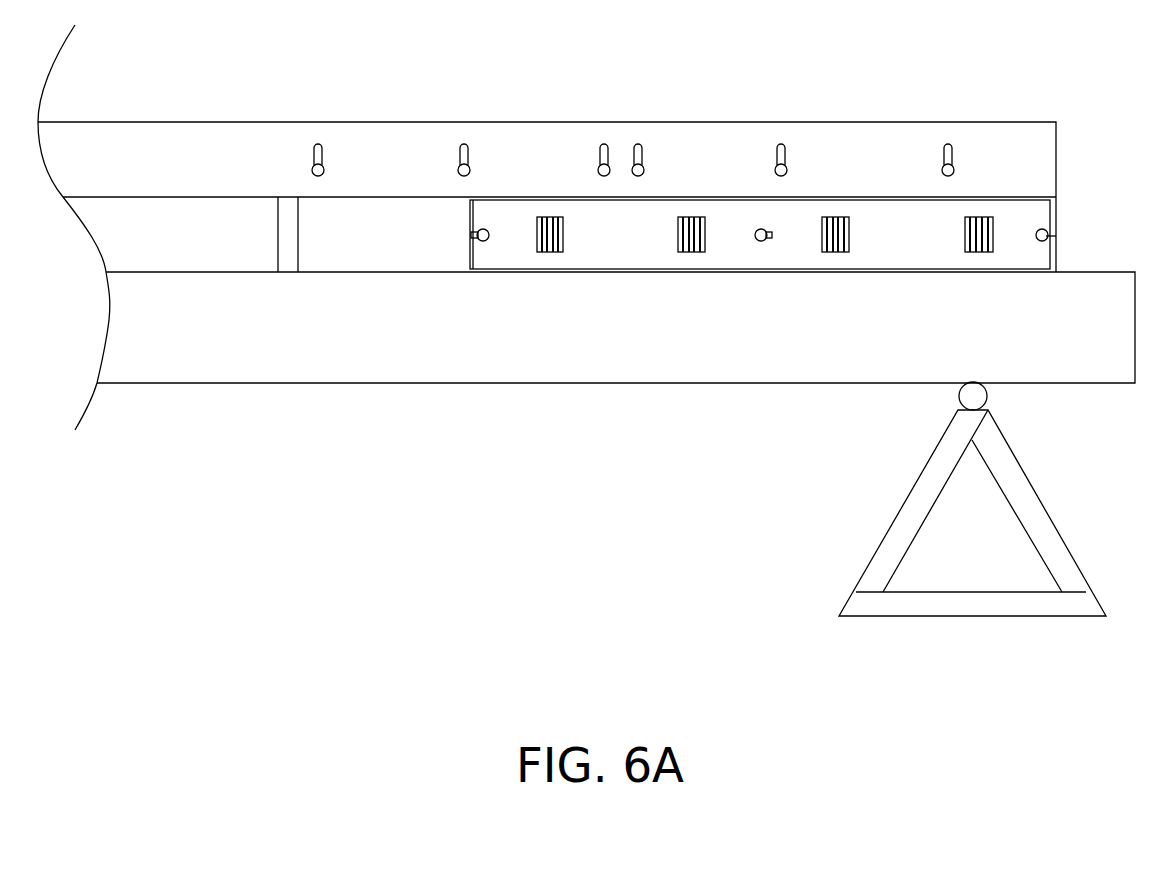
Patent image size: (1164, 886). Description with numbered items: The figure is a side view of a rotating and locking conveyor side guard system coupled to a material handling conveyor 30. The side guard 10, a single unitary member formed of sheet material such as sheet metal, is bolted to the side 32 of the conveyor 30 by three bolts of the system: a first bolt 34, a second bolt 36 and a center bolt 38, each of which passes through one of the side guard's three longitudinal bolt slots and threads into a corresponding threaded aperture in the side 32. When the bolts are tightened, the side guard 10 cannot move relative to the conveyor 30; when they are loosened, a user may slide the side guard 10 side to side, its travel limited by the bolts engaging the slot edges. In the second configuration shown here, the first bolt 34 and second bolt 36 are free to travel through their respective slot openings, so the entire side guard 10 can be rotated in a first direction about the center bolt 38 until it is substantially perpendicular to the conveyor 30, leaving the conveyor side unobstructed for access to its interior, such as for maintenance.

The side guard 10 is at (1058, 235).
The material handling conveyor 30 is at (508, 404).
The side 32 is at (636, 342).
The first bolt 34 is at (485, 229).
The second bolt 36 is at (1045, 228).
The center bolt 38 is at (760, 229).